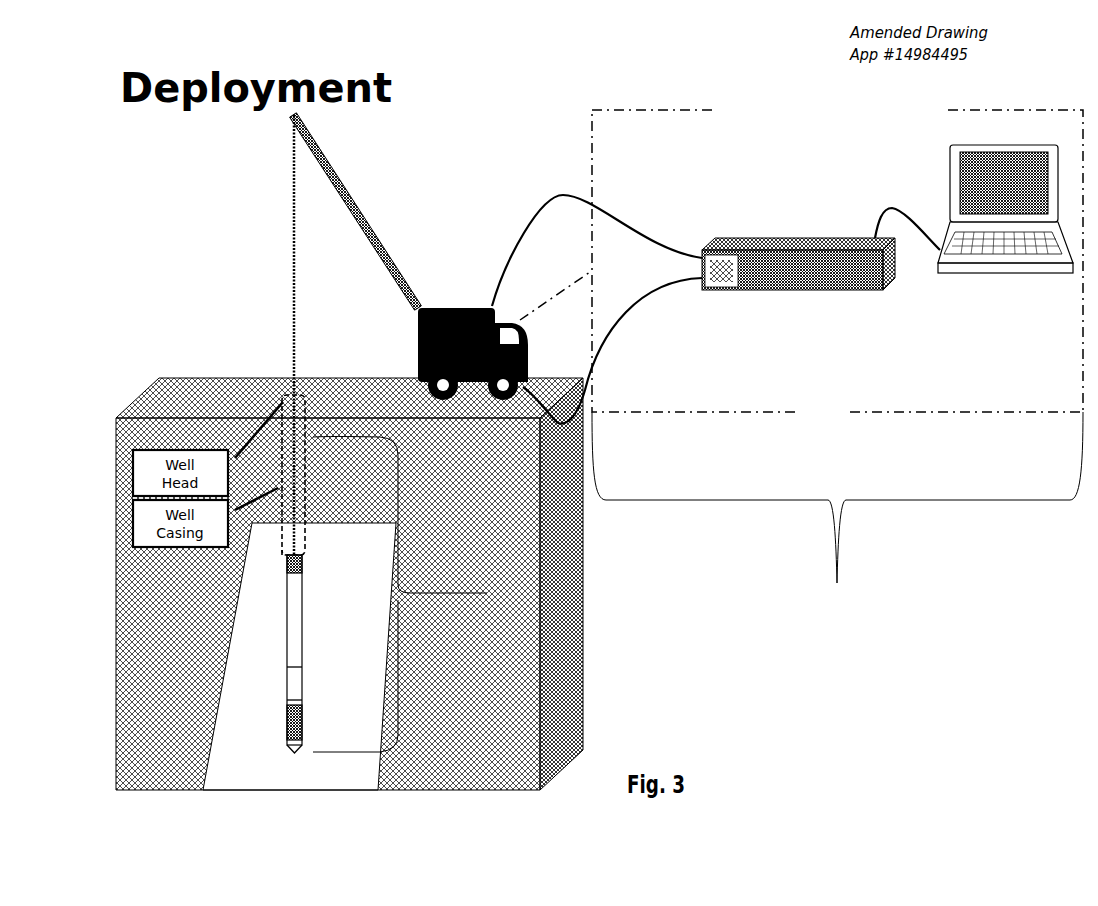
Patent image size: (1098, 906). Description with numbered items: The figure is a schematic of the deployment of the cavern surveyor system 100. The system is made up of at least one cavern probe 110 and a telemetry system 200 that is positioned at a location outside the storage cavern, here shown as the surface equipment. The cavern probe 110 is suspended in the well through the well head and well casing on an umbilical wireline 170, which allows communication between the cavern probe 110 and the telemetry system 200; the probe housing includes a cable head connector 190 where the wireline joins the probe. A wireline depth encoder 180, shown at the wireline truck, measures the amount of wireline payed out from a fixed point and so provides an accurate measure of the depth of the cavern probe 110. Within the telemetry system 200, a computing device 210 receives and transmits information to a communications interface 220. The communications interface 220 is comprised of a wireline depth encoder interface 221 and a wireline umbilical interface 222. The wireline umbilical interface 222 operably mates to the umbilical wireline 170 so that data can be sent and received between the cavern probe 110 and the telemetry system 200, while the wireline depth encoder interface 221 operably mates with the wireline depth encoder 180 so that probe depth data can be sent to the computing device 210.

The cavern surveyor system 100 is at (497, 593).
The cavern probe 110 is at (305, 627).
The umbilical wireline 170 is at (298, 460).
The wireline depth encoder 180 is at (468, 382).
The cable head connector 190 is at (300, 527).
The telemetry system 200 is at (801, 260).
The computing device 210 is at (1005, 219).
The communications interface 220 is at (821, 260).
The wireline depth encoder interface 221 is at (613, 338).
The wireline umbilical interface 222 is at (572, 190).